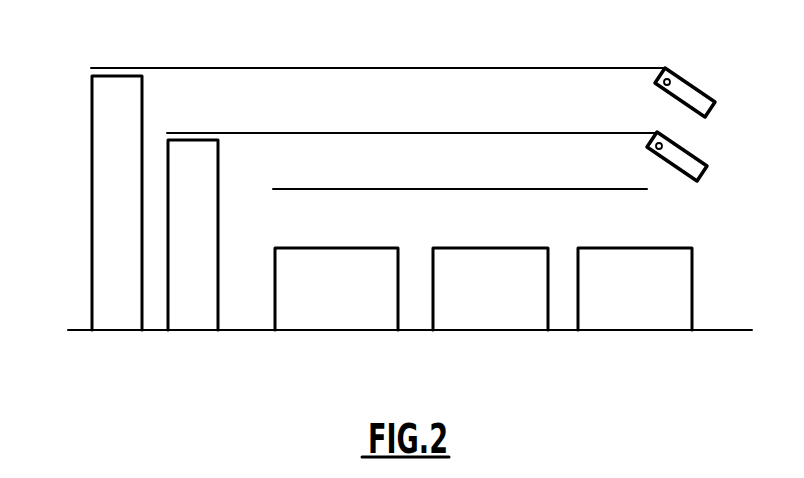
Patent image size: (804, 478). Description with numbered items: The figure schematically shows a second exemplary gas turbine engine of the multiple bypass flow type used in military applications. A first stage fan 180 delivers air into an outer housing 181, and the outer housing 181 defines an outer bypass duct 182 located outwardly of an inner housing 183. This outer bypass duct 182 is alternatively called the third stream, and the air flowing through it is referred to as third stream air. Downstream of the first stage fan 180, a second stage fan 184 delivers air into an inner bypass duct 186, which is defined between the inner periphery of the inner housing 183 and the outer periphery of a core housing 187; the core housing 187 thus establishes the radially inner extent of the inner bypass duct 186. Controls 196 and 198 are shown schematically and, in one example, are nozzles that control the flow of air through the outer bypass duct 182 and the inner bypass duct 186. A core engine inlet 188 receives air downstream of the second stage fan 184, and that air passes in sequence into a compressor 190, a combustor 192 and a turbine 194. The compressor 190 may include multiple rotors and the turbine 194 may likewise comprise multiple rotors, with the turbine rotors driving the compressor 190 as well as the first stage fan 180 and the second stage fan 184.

The first stage fan 180 is at (113, 187).
The outer housing 181 is at (175, 68).
The outer bypass duct 182 is at (275, 92).
The inner housing 183 is at (360, 130).
The second stage fan 184 is at (187, 305).
The inner bypass duct 186 is at (423, 155).
The core housing 187 is at (512, 188).
The core engine inlet 188 is at (260, 305).
The compressor 190 is at (348, 305).
The combustor 192 is at (498, 305).
The turbine 194 is at (642, 305).
The control 196 is at (695, 93).
The control 198 is at (693, 158).